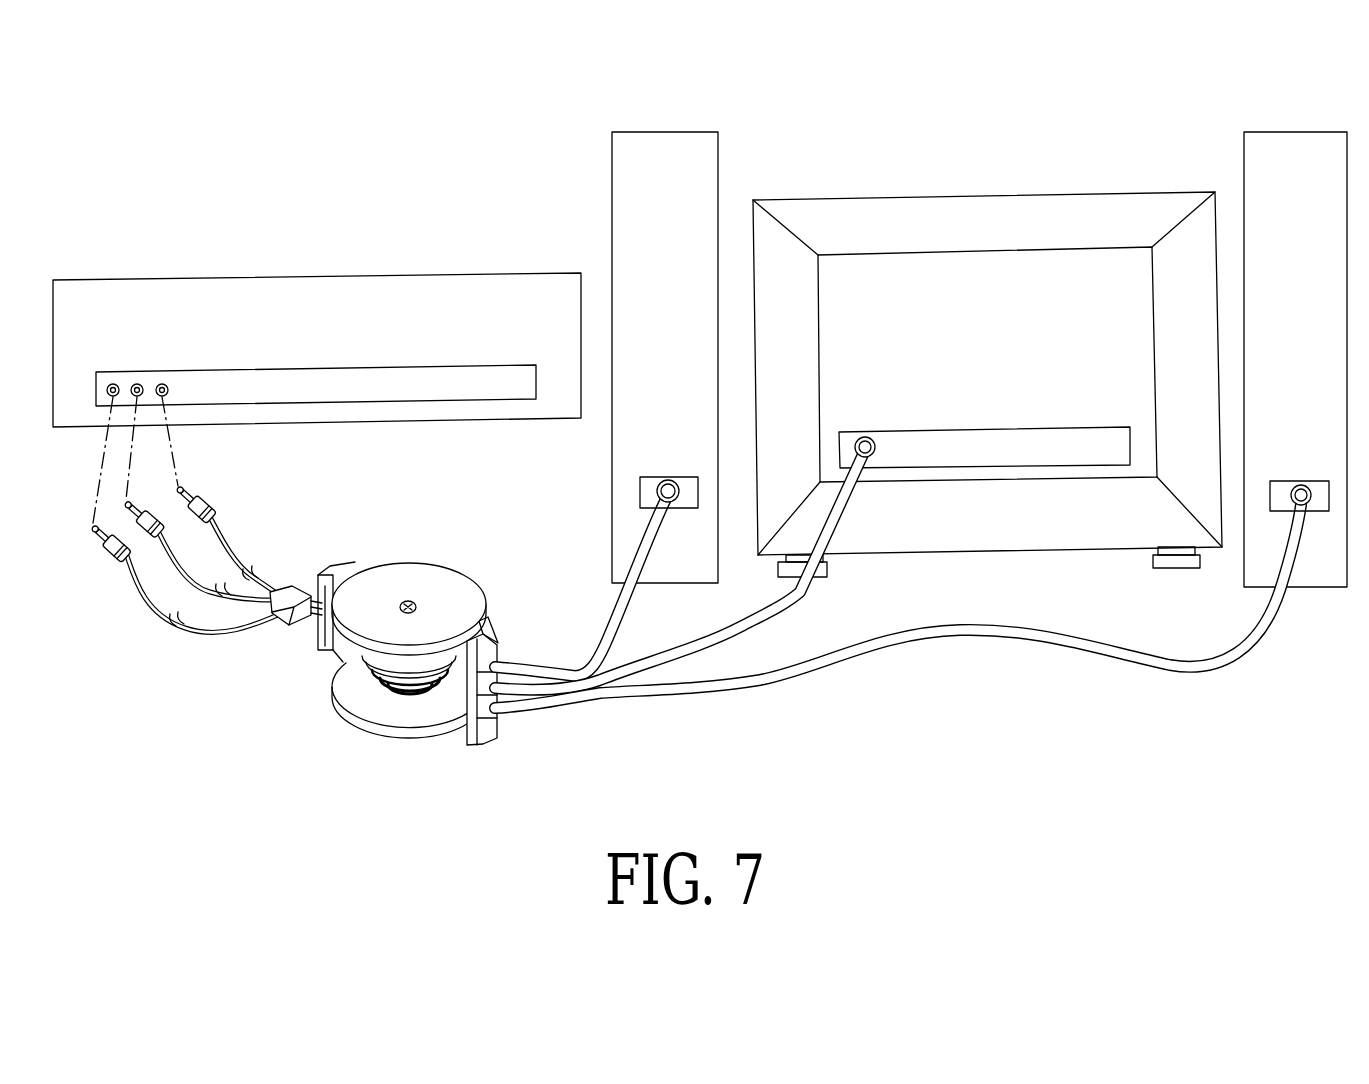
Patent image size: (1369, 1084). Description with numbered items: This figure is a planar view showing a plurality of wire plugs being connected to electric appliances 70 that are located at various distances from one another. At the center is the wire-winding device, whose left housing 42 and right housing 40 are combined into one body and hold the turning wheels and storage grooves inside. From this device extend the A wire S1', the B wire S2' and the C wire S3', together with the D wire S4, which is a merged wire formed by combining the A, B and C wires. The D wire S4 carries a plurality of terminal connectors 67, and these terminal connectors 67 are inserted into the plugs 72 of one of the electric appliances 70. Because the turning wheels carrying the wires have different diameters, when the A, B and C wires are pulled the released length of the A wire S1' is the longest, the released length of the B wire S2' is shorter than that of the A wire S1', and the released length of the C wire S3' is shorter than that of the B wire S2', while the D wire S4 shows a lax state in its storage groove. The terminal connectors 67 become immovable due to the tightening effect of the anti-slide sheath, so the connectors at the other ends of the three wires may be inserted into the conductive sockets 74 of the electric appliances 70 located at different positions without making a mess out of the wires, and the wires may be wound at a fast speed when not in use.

The electric appliances 70 is at (288, 300).
The plugs 72 is at (114, 385).
The terminal connectors 67 is at (213, 512).
The D wire S4 is at (227, 546).
The left housing 42 is at (437, 587).
The right housing 40 is at (432, 727).
The A wire S1' is at (898, 614).
The B wire S2' is at (680, 621).
The C wire S3' is at (608, 656).
The conductive sockets 74 is at (680, 477).